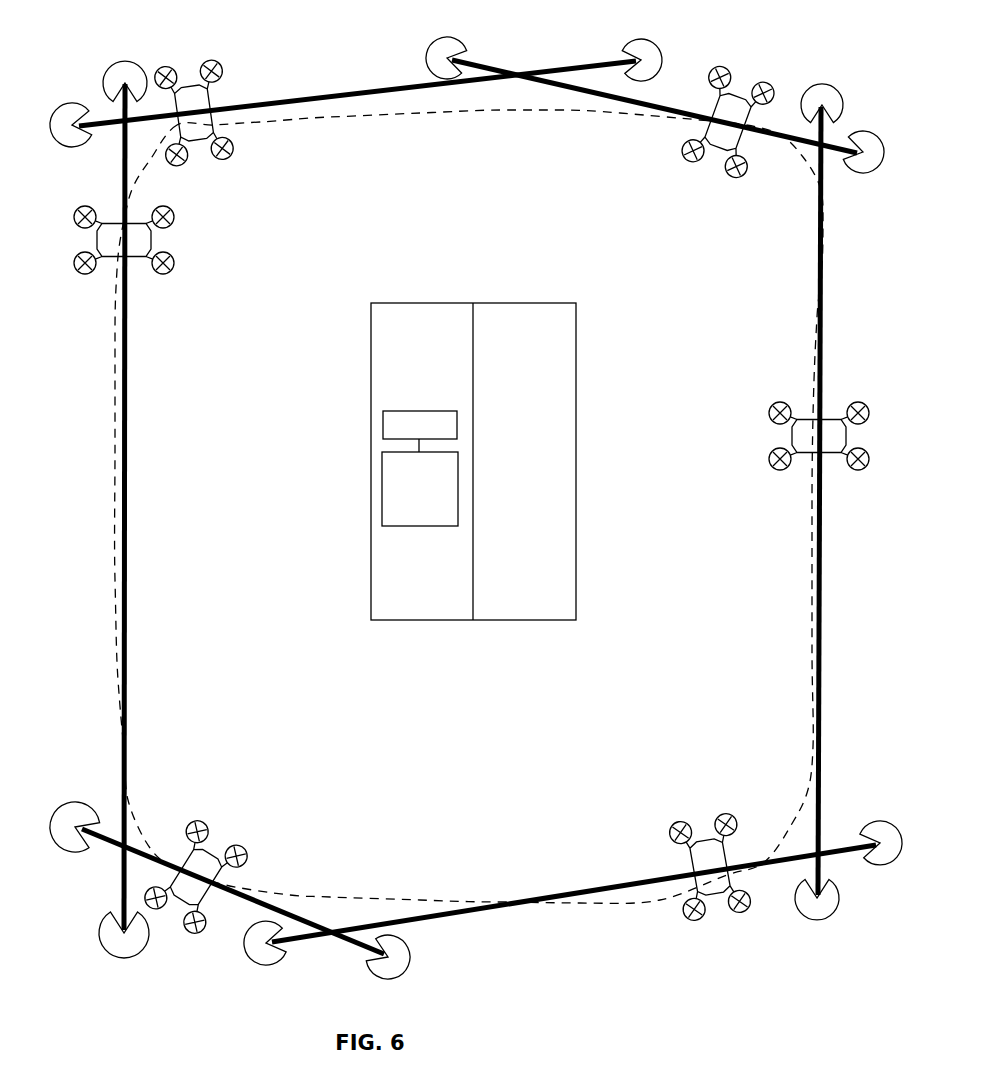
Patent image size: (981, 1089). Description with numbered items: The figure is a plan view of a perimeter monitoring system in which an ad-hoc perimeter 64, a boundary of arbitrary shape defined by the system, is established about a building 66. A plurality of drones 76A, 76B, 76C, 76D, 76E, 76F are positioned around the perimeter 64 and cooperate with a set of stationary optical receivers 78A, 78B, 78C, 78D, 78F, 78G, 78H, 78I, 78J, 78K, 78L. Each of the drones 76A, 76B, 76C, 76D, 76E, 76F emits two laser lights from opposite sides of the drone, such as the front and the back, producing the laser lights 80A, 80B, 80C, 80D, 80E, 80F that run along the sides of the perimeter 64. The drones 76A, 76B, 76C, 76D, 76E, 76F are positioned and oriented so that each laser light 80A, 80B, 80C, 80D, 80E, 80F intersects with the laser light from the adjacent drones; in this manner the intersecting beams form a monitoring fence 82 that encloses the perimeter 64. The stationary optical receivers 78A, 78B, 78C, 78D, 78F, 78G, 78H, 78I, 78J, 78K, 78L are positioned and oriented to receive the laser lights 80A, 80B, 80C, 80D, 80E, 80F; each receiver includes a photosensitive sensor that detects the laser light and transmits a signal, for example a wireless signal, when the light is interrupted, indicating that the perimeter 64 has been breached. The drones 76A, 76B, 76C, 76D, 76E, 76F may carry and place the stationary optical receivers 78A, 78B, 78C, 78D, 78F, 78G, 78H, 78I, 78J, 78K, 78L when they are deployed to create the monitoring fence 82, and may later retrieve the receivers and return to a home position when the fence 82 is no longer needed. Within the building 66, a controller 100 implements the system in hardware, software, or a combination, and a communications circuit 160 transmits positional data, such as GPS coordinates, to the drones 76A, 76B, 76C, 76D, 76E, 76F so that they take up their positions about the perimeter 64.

The ad-hoc perimeter 64 is at (112, 508).
The building 66 is at (469, 486).
The drone 76A is at (213, 62).
The drone 76B is at (170, 272).
The drone 76C is at (197, 818).
The drone 76D is at (670, 832).
The drone 76E is at (775, 472).
The drone 76F is at (688, 160).
The stationary optical receiver 78A is at (60, 115).
The stationary optical receiver 78B is at (68, 802).
The stationary optical receiver 78C is at (140, 960).
The stationary optical receiver 78D is at (411, 950).
The stationary optical receiver 78F is at (800, 920).
The stationary optical receiver 78G is at (893, 821).
The stationary optical receiver 78H is at (878, 170).
The stationary optical receiver 78I is at (812, 86).
The stationary optical receiver 78J is at (656, 40).
The stationary optical receiver 78K is at (426, 52).
The stationary optical receiver 78L is at (125, 61).
The laser light 80A is at (337, 103).
The laser light 80B is at (127, 460).
The laser light 80C is at (282, 905).
The laser light 80D is at (578, 882).
The laser light 80E is at (823, 608).
The laser light 80F is at (602, 98).
The monitoring fence 82 is at (549, 935).
The controller 100 is at (423, 528).
The communications circuit 160 is at (445, 410).